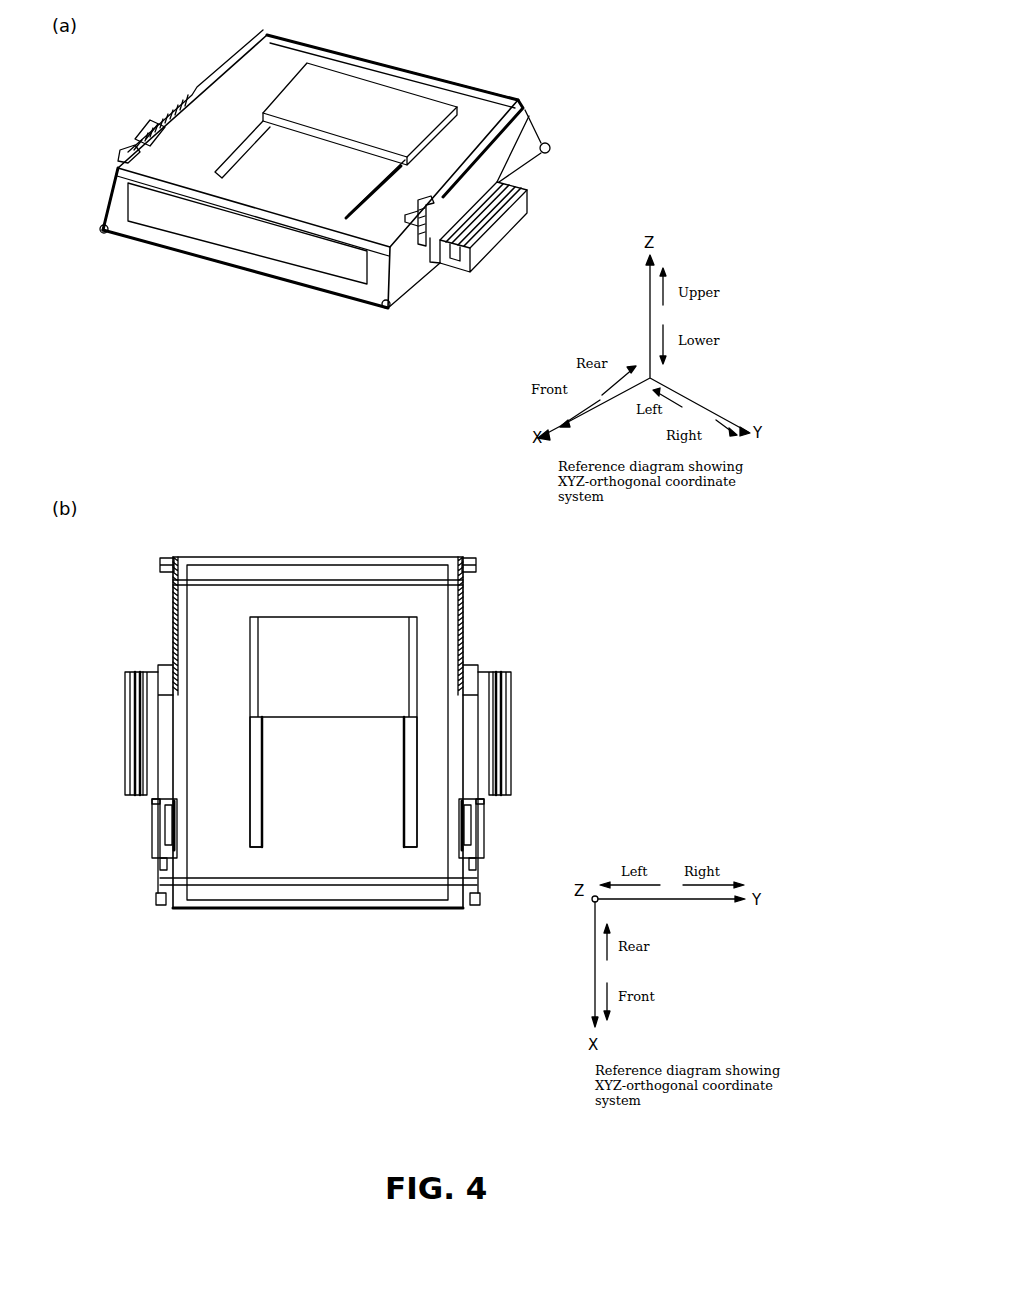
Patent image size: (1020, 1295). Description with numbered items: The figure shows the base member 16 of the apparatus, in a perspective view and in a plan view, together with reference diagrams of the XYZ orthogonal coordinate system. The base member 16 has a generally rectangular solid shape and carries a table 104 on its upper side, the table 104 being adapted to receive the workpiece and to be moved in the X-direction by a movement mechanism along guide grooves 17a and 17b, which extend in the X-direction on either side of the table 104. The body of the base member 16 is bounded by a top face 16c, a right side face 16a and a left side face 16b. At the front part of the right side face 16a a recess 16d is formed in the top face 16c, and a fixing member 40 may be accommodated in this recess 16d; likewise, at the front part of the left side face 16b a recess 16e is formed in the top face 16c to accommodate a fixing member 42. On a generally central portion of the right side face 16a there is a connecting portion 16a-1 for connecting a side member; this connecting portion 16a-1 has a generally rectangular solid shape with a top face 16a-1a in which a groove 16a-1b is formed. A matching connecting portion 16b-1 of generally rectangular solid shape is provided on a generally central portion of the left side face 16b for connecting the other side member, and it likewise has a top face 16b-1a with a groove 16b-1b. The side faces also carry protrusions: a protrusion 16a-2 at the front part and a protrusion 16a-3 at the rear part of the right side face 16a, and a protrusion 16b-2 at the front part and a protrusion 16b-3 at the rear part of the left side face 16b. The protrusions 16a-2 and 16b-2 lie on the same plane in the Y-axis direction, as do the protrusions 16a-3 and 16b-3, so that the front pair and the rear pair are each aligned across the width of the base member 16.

The base member 16 is at (516, 96).
The table 104 is at (372, 90).
The guide groove 17a is at (375, 228).
The guide groove 17b is at (232, 172).
The right side face 16a is at (410, 283).
The left side face 16b is at (105, 200).
The top face 16c is at (285, 195).
The recess 16d is at (430, 248).
The recess 16e is at (125, 152).
The fixing member 40 is at (437, 252).
The fixing member 42 is at (147, 128).
The connecting portion 16a-1 is at (505, 226).
The top face 16a-1a is at (500, 183).
The groove 16a-1b is at (458, 270).
The protrusion 16a-2 is at (384, 310).
The protrusion 16a-3 is at (553, 146).
The connecting portion 16b-1 is at (168, 100).
The top face 16b-1a is at (152, 680).
The groove 16b-1b is at (138, 675).
The protrusion 16b-2 is at (103, 236).
The protrusion 16b-3 is at (158, 565).